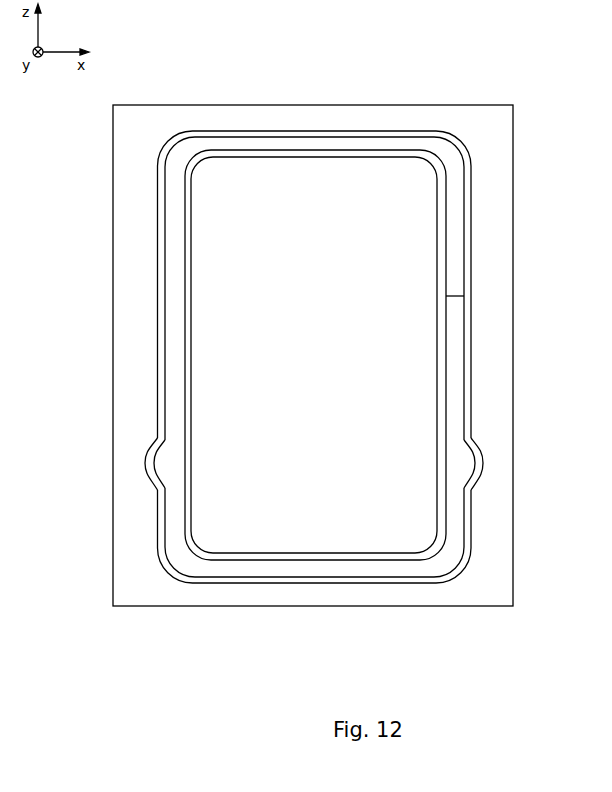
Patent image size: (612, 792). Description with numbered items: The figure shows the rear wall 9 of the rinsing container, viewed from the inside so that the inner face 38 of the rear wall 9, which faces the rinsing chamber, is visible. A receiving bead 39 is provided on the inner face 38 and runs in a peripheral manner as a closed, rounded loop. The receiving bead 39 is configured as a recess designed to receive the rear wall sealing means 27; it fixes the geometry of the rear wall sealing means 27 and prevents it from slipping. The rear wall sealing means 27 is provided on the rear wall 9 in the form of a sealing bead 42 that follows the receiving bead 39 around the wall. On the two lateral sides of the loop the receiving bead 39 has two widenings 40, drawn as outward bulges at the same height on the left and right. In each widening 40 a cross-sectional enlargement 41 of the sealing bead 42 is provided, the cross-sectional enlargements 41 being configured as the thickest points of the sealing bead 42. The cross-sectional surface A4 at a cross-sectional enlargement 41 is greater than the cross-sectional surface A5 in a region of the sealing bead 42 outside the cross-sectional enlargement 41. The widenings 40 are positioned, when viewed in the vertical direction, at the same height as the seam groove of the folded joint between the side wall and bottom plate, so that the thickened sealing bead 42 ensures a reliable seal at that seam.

The rear wall 9 is at (510, 73).
The rear wall sealing means 27 is at (310, 145).
The inner face 38 is at (320, 352).
The receiving bead 39 is at (479, 331).
The widening 40 is at (145, 462).
The cross-sectional enlargement 41 is at (174, 463).
The sealing bead 42 is at (473, 378).
The cross-sectional surface A4 is at (480, 468).
The cross-sectional surface A5 is at (455, 296).